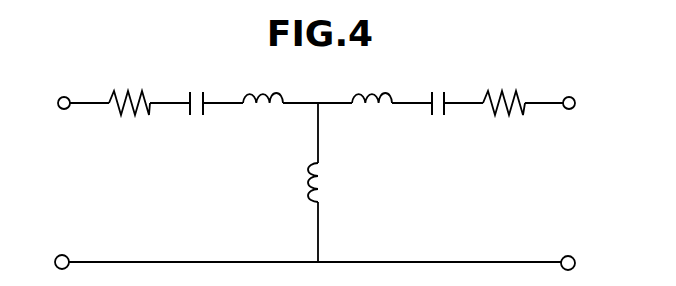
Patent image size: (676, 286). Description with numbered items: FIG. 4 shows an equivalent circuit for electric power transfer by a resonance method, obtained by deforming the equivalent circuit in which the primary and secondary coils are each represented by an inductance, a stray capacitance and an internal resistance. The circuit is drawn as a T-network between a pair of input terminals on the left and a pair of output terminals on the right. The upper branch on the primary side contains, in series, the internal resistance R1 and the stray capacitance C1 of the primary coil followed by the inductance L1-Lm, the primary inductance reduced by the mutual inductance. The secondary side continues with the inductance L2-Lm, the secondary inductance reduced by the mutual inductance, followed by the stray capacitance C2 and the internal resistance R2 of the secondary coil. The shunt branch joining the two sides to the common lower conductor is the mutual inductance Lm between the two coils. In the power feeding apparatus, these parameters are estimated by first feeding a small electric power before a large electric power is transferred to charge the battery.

The internal resistance of the primary coil R1 is at (129, 92).
The stray capacitance of the primary coil C1 is at (196, 92).
The primary inductance less mutual inductance L1-Lm is at (259, 87).
The secondary inductance less mutual inductance L2-Lm is at (367, 87).
The stray capacitance of the secondary coil C2 is at (437, 92).
The internal resistance of the secondary coil R2 is at (504, 92).
The mutual inductance Lm is at (295, 182).